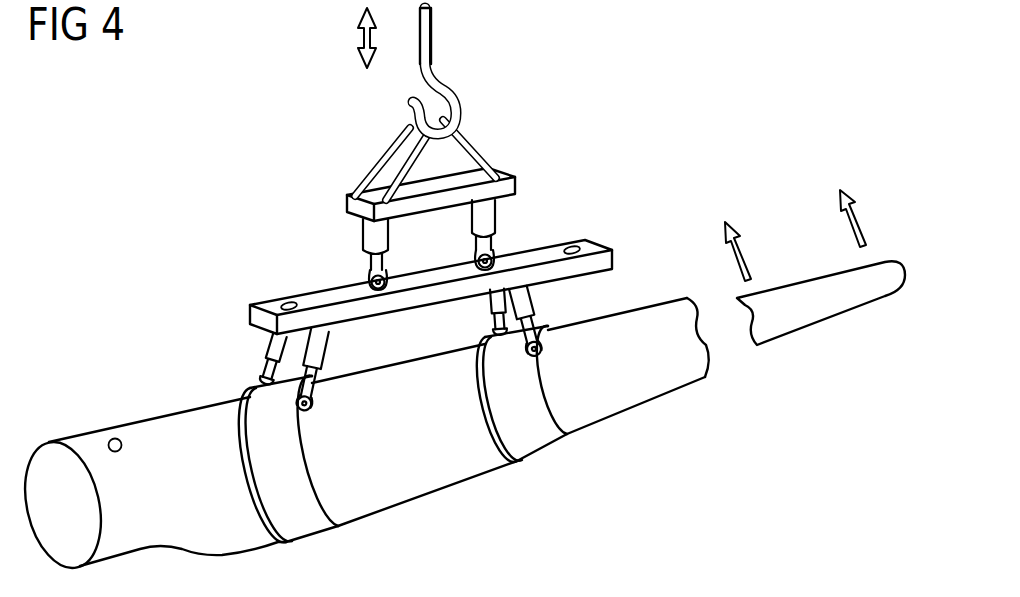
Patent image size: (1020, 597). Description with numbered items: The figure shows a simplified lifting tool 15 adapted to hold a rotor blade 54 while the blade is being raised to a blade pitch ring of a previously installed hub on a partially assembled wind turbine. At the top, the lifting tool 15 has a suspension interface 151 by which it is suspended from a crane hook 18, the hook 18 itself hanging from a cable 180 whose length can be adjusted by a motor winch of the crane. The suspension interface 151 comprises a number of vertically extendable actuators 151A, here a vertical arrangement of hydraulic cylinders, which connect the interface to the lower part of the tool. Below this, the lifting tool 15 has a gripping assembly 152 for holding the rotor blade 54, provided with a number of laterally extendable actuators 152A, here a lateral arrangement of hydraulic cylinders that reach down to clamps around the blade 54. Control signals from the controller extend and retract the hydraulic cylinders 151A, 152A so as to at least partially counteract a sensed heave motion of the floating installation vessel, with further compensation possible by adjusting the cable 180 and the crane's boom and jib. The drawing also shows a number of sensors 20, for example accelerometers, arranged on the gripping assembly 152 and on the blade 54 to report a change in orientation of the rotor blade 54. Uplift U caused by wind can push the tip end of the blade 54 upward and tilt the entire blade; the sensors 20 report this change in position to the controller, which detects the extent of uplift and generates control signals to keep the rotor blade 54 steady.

The lifting tool 15 is at (556, 128).
The crane hook 18 is at (450, 97).
The cable 180 is at (425, 24).
The sensors 20 is at (287, 305).
The rotor blade 54 is at (183, 424).
The suspension interface 151 is at (350, 204).
The vertically extendable actuators 151A is at (490, 218).
The gripping assembly 152 is at (330, 298).
The laterally extendable actuators 152A is at (540, 302).
The uplift U is at (858, 180).